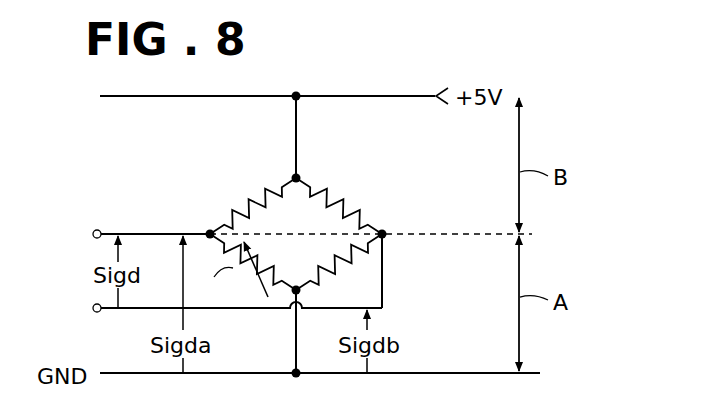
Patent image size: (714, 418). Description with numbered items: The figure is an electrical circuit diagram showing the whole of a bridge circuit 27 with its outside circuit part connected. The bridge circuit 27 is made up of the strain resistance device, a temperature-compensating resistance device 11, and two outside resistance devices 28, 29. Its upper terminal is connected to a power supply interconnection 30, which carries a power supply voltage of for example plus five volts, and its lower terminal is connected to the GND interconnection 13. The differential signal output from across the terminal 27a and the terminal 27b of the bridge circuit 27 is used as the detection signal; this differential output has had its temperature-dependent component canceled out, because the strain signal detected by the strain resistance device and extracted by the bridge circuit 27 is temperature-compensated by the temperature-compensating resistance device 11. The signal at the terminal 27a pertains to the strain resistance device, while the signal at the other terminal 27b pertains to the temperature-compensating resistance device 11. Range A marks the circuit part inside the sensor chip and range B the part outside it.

The power supply interconnection 30 is at (376, 95).
The bridge circuit 27 is at (317, 224).
The terminal 27a is at (208, 229).
The terminal 27b is at (388, 237).
The outside resistance device 28 is at (253, 192).
The outside resistance device 29 is at (356, 200).
The temperature-compensating resistance device 11 is at (351, 268).
The GND interconnection 13 is at (457, 372).